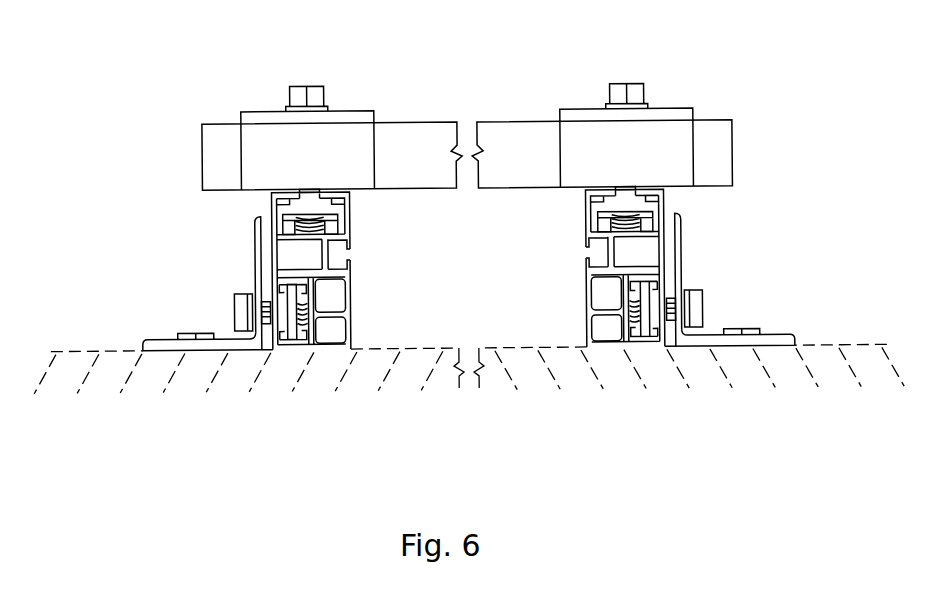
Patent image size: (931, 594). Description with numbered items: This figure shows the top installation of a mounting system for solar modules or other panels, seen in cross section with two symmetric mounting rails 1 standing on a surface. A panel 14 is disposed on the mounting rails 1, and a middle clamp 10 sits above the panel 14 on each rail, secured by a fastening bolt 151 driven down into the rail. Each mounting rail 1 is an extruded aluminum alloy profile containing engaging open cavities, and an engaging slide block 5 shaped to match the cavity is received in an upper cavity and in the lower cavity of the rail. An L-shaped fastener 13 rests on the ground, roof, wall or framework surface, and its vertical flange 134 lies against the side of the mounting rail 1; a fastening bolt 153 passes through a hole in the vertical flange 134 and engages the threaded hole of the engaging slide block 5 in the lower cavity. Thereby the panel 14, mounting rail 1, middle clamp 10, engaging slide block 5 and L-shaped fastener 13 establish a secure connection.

The mounting rail 1 is at (293, 251).
The engaging slide block 5 is at (315, 209).
The middle clamp 10 is at (275, 117).
The L-shaped fastener 13 is at (173, 345).
The panel 14 is at (225, 154).
The vertical flange 134 is at (261, 261).
The fastening bolt 151 is at (300, 95).
The fastening bolt 153 is at (244, 301).